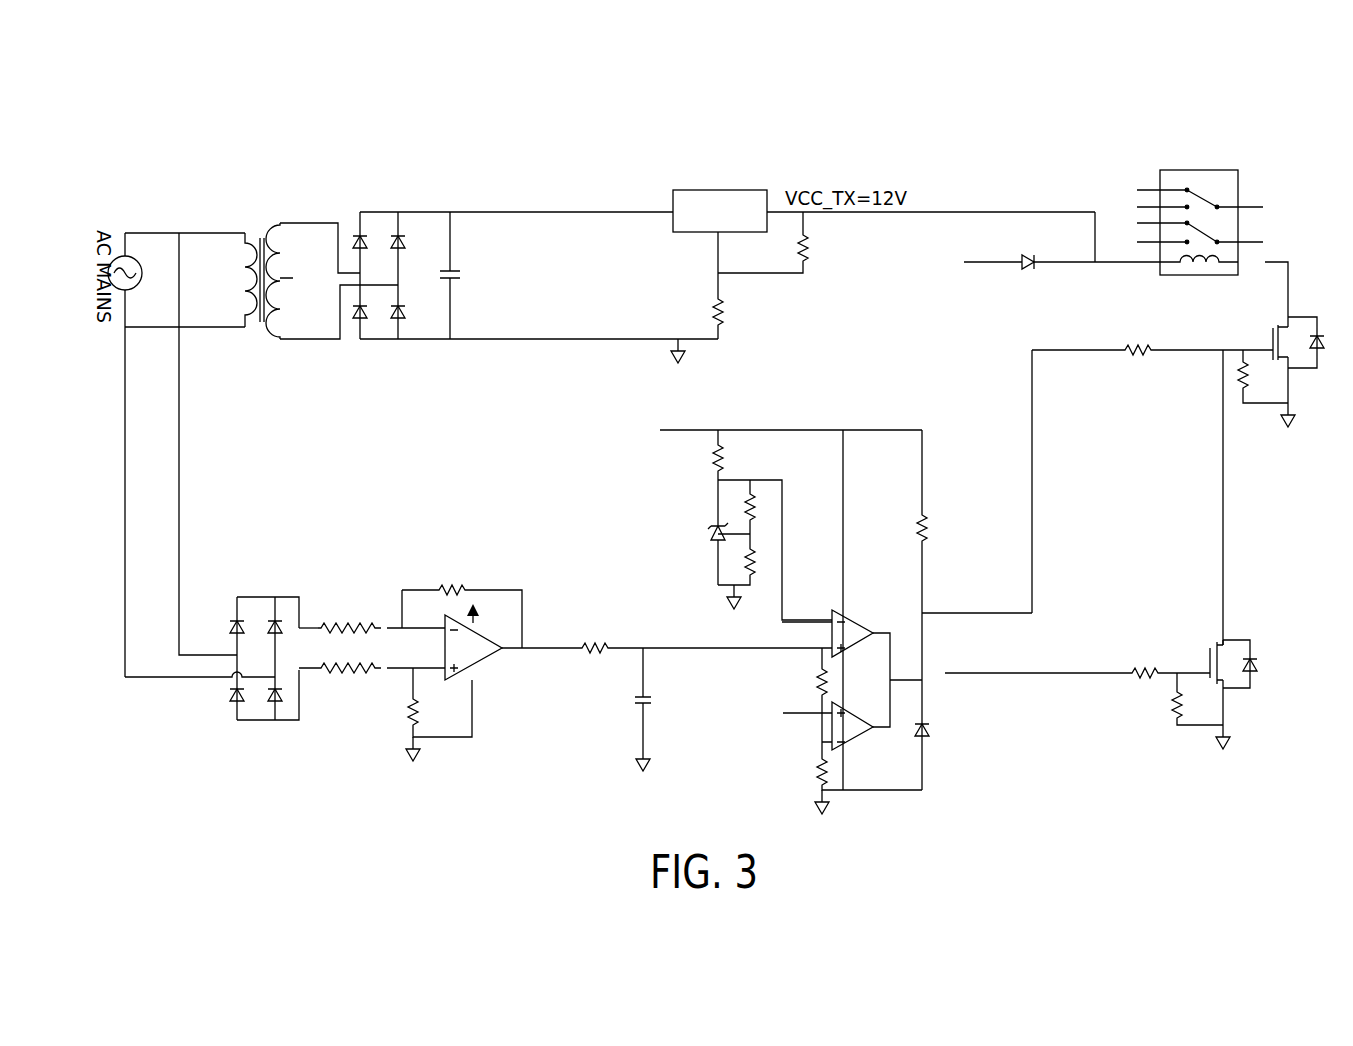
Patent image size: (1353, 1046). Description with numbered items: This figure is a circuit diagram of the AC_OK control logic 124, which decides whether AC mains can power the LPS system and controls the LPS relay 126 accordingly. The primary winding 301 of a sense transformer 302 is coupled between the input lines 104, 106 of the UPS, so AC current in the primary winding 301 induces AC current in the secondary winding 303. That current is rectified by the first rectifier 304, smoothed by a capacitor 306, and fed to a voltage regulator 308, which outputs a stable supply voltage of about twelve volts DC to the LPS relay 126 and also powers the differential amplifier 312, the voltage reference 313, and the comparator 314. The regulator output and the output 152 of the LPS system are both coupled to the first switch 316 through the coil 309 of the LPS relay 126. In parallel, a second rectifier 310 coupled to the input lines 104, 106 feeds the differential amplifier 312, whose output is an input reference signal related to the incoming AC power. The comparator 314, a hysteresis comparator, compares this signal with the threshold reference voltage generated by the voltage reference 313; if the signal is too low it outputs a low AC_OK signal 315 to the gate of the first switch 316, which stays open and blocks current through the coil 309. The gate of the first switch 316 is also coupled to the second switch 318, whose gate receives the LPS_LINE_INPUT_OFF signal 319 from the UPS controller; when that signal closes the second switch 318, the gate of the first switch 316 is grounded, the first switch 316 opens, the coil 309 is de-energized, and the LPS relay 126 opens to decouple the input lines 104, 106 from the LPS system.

The AC_OK control logic 124 is at (127, 71).
The input line 104 is at (203, 232).
The input line 106 is at (203, 328).
The primary winding 301 is at (247, 284).
The sense transformer 302 is at (257, 230).
The secondary winding 303 is at (313, 253).
The first rectifier 304 is at (367, 207).
The capacitor 306 is at (453, 272).
The voltage regulator 308 is at (672, 190).
The second rectifier 310 is at (256, 590).
The differential amplifier 312 is at (464, 672).
The voltage reference 313 is at (712, 541).
The comparator 314 is at (795, 735).
The AC_OK signal 315 is at (1032, 480).
The first switch 316 is at (1272, 340).
The second switch 318 is at (1208, 655).
The LPS_LINE_INPUT_OFF signal 319 is at (1117, 674).
The LPS relay 126 is at (1232, 190).
The output of the LPS system 152 is at (980, 265).
The coil 309 is at (1190, 263).